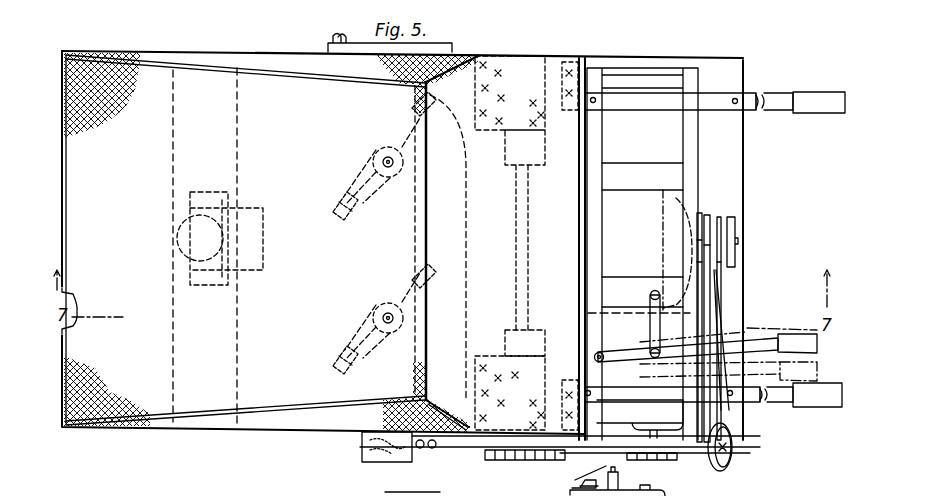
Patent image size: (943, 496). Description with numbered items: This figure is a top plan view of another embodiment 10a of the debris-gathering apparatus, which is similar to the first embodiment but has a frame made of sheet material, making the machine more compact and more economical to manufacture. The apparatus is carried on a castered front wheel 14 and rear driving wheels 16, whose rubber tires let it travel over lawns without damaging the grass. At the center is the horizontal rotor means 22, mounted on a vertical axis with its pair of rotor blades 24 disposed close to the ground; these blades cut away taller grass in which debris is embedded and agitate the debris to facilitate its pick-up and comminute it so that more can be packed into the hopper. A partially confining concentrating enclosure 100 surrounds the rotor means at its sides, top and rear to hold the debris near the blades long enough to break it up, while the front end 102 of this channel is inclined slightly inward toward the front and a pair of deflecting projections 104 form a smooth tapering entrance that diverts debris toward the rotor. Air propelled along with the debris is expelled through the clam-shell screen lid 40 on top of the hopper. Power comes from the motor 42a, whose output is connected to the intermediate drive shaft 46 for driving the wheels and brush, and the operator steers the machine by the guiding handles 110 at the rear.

The debris-gathering apparatus embodiment 10a is at (546, 48).
The front wheel 14 is at (258, 270).
The rear wheel 16 is at (485, 345).
The horizontal rotor means 22 is at (356, 328).
The rotor blade 24 is at (333, 203).
The screen lid 40 is at (152, 410).
The motor 42a is at (678, 188).
The intermediate drive shaft 46 is at (693, 450).
The concentrating enclosure 100 is at (450, 236).
The front end of channel 102 is at (340, 98).
The deflecting projection 104 is at (415, 82).
The guiding handle 110 is at (818, 111).